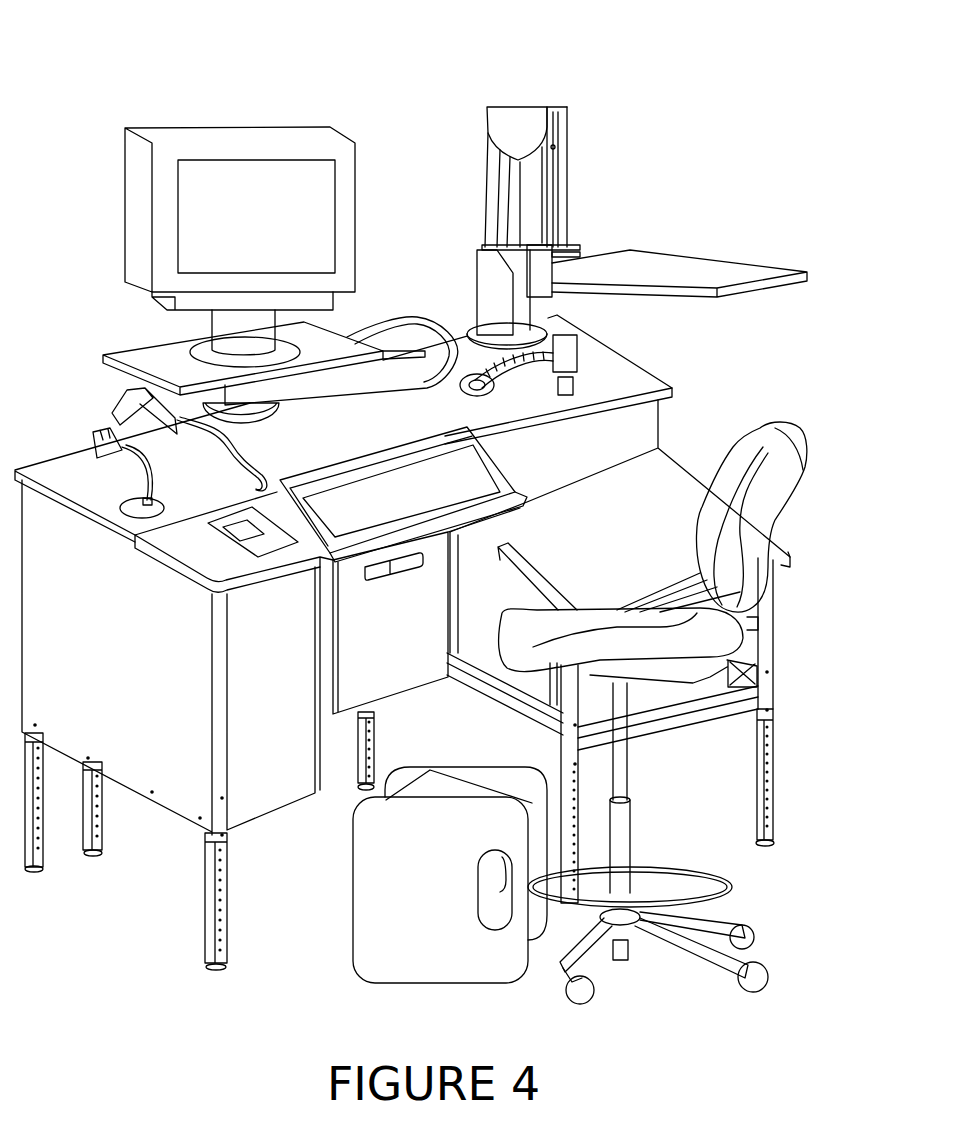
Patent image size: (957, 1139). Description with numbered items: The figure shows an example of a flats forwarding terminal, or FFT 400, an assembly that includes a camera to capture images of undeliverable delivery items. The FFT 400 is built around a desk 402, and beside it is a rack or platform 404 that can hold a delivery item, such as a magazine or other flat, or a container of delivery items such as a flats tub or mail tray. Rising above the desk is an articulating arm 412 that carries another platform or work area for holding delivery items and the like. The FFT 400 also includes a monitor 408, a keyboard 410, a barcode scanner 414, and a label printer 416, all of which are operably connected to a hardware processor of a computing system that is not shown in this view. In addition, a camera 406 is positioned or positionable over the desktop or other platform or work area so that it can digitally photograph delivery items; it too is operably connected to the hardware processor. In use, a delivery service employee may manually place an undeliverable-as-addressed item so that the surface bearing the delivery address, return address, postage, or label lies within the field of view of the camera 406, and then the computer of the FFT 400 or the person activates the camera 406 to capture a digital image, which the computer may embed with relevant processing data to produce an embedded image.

The flats forwarding terminal 400 is at (130, 75).
The desk 402 is at (640, 383).
The rack or platform 404 is at (675, 457).
The camera 406 is at (571, 353).
The monitor 408 is at (345, 222).
The keyboard 410 is at (450, 440).
The articulating arm 412 is at (567, 208).
The barcode scanner 414 is at (125, 393).
The label printer 416 is at (219, 562).